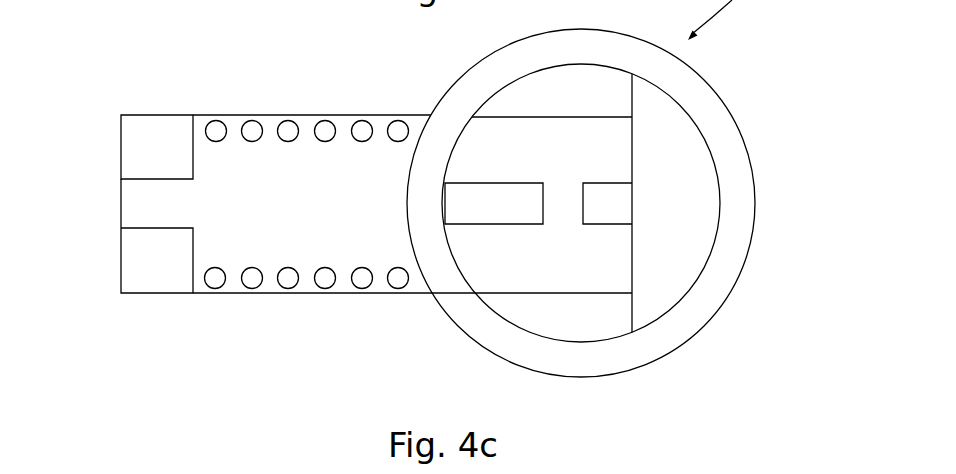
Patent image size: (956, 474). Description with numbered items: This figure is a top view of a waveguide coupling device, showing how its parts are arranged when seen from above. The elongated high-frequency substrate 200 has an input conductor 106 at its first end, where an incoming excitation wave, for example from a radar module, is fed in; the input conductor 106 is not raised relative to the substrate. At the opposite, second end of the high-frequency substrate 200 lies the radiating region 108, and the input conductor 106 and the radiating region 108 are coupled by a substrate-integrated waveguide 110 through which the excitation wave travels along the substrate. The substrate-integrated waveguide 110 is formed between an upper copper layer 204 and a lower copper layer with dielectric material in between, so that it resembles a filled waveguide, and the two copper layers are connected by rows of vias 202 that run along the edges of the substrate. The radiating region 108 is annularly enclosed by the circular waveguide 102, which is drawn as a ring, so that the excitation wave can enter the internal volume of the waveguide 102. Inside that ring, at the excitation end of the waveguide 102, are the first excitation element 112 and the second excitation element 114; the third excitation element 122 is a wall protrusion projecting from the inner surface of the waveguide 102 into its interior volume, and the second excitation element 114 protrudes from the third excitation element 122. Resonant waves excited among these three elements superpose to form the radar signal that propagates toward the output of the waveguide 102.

The waveguide 102 is at (725, 106).
The input conductor 106 is at (157, 209).
The radiating region 108 is at (562, 267).
The substrate-integrated waveguide 110 is at (162, 135).
The first excitation element 112 is at (506, 212).
The second excitation element 114 is at (614, 206).
The third excitation element 122 is at (646, 273).
The high-frequency substrate 200 is at (306, 108).
The vias 202 is at (252, 282).
The copper layer 204 is at (336, 245).